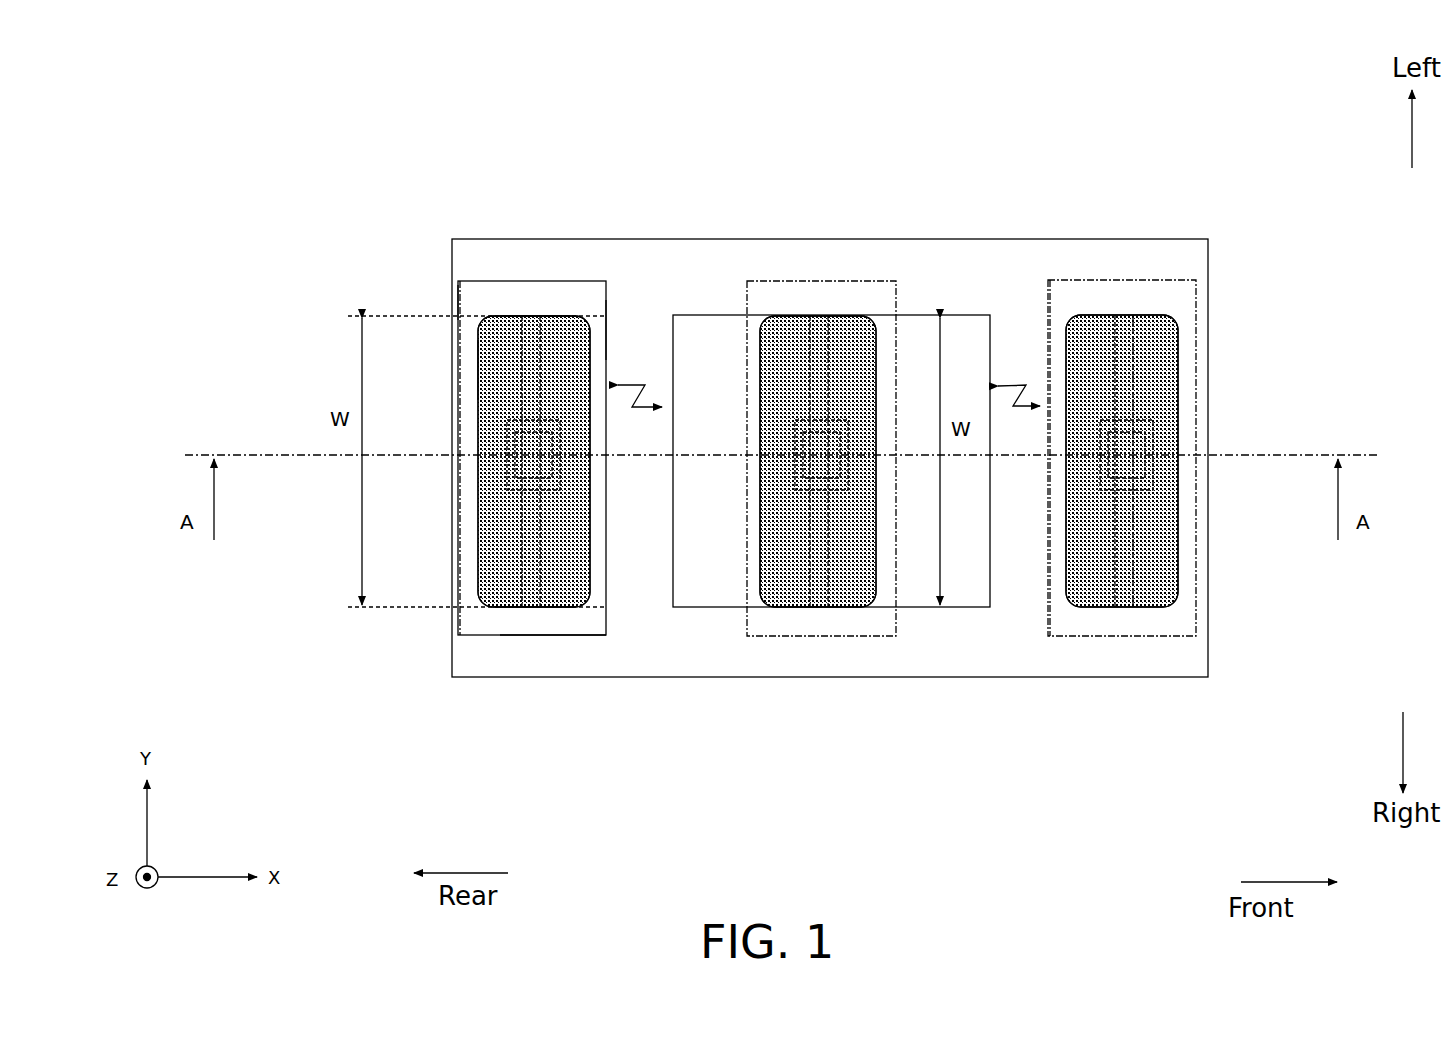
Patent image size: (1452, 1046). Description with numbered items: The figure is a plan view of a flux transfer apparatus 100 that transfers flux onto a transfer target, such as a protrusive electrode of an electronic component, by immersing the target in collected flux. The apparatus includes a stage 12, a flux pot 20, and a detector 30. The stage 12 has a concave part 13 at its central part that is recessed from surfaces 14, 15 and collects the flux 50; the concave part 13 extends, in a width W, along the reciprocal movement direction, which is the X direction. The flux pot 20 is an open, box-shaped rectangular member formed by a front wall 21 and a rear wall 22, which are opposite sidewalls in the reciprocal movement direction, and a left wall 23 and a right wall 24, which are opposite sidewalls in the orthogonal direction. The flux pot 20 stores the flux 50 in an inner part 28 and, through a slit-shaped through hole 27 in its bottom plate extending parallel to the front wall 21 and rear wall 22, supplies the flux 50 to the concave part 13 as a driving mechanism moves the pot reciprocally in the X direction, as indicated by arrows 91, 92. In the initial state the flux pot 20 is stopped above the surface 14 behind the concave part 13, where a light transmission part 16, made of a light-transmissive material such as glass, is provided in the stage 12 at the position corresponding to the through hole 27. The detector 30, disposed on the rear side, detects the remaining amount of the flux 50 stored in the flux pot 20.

The flux transfer apparatus 100 is at (135, 128).
The stage 12 is at (1210, 480).
The concave part 13 is at (910, 316).
The surface 14 is at (515, 265).
The surface 15 is at (1122, 262).
The light transmission part 16 is at (500, 470).
The flux pot 20 is at (458, 272).
The front wall 21 is at (606, 318).
The rear wall 22 is at (458, 305).
The left wall 23 is at (547, 316).
The right wall 24 is at (557, 635).
The through hole 27 is at (525, 607).
The inner part 28 is at (482, 380).
The detector 30 is at (502, 500).
The flux 50 is at (560, 337).
The arrow 91 is at (643, 372).
The arrow 92 is at (1012, 378).